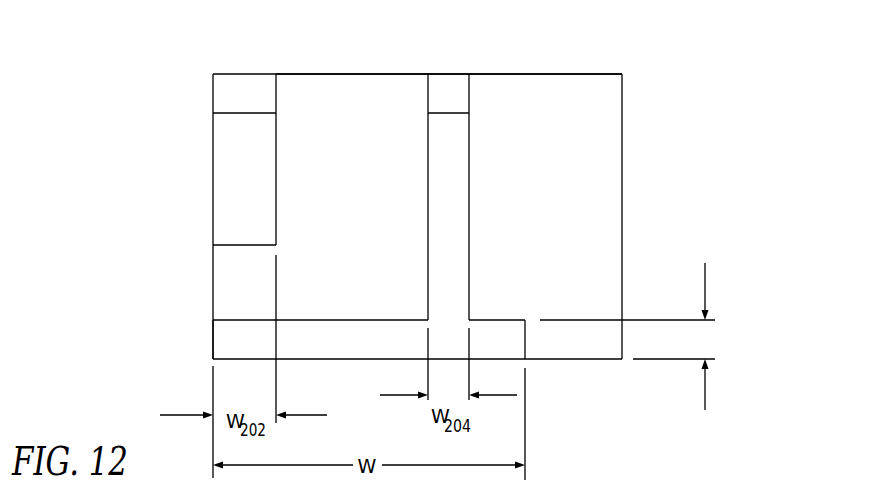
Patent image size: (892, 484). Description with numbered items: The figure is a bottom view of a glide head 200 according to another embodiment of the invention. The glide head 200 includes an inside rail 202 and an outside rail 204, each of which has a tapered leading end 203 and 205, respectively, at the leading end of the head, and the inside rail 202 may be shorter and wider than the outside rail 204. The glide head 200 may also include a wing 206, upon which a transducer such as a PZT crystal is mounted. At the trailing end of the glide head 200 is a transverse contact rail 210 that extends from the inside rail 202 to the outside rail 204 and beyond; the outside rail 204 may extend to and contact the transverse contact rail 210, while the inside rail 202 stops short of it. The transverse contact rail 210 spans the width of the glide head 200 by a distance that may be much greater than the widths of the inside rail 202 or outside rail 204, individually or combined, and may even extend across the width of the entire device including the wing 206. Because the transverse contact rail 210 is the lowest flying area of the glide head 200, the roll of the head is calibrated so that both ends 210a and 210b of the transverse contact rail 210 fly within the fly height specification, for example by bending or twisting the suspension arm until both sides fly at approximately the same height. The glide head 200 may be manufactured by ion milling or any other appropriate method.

The glide head 200 is at (690, 67).
The inside rail 202 is at (218, 153).
The tapered leading end 203 is at (278, 90).
The outside rail 204 is at (469, 153).
The tapered leading end 205 is at (428, 90).
The wing 206 is at (622, 131).
The transverse contact rail 210 is at (228, 318).
The end of transverse contact rail 210a is at (213, 337).
The end of transverse contact rail 210b is at (525, 343).